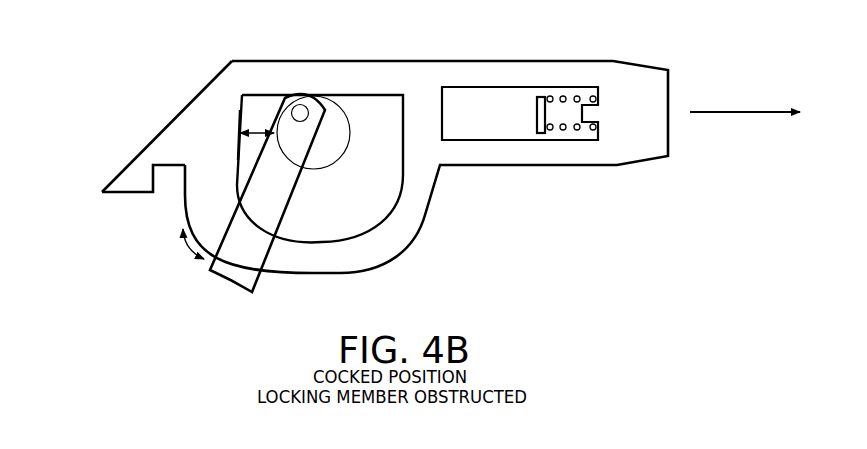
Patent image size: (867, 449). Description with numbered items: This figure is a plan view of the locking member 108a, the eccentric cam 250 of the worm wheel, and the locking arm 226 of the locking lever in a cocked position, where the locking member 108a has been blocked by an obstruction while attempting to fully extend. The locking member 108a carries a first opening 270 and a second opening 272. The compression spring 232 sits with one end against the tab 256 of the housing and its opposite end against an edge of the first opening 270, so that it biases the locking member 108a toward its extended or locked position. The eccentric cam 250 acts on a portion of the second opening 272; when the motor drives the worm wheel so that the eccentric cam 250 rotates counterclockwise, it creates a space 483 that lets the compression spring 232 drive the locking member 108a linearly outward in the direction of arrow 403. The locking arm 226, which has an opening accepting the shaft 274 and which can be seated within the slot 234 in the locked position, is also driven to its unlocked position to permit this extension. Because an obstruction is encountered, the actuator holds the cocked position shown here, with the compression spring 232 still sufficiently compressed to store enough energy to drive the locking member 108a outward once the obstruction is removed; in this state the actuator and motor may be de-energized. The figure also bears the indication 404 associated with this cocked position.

The locking member 108a is at (638, 166).
The locking arm 226 is at (282, 215).
The compression spring 232 is at (576, 94).
The slot 234 is at (151, 157).
The eccentric cam 250 is at (336, 164).
The tab 256 is at (538, 128).
The first opening 270 is at (507, 93).
The second opening 272 is at (385, 110).
The shaft 274 is at (293, 97).
The arrow 403 is at (722, 112).
The cocked position 404 is at (237, 133).
The space 483 is at (264, 128).